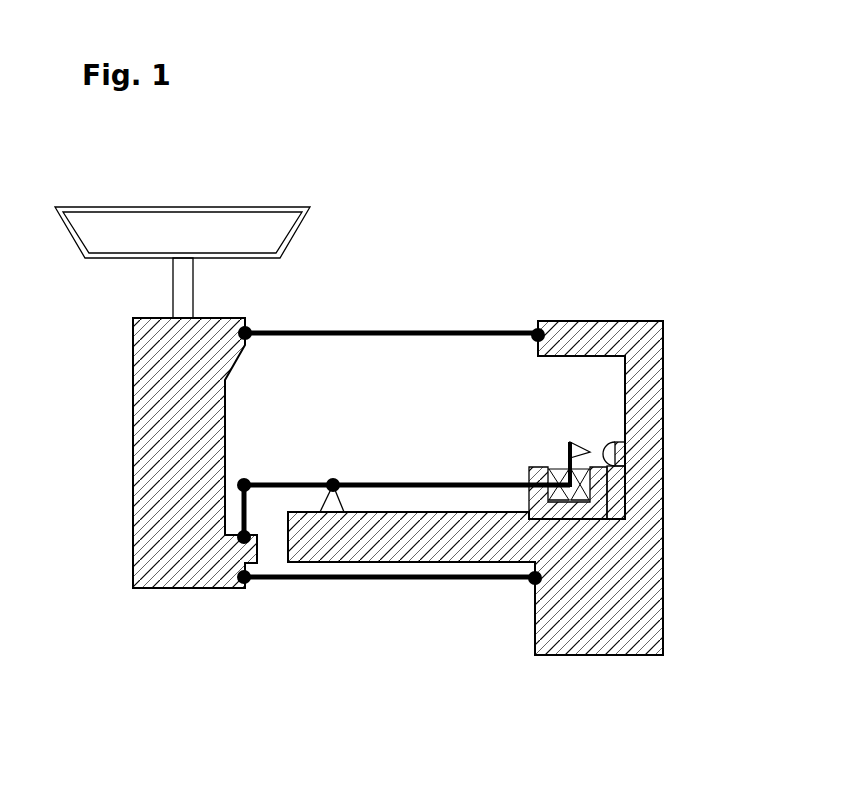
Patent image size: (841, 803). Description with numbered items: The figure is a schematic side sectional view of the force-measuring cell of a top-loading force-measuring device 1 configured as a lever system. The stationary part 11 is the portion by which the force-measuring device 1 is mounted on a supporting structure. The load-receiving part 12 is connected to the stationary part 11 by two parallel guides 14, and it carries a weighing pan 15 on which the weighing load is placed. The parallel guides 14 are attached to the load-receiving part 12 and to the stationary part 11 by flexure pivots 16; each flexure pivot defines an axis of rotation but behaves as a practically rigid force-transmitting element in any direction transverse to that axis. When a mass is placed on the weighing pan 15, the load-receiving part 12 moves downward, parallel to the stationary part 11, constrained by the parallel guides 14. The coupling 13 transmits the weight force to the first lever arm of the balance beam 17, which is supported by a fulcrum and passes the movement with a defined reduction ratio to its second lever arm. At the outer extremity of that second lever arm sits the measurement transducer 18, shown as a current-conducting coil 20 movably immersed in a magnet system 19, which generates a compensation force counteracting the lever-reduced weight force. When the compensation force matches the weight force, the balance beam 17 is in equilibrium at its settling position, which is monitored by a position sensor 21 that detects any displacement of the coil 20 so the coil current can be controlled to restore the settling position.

The force-measuring device 1 is at (698, 235).
The stationary part 11 is at (613, 632).
The load-receiving part 12 is at (147, 567).
The coupling 13 is at (243, 508).
The parallel guides 14 is at (410, 333).
The weighing pan 15 is at (180, 236).
The flexure pivots 16 is at (245, 333).
The balance beam 17 is at (403, 497).
The measurement transducer 18 is at (617, 511).
The magnet system 19 is at (608, 483).
The coil 20 is at (595, 473).
The position sensor 21 is at (603, 423).